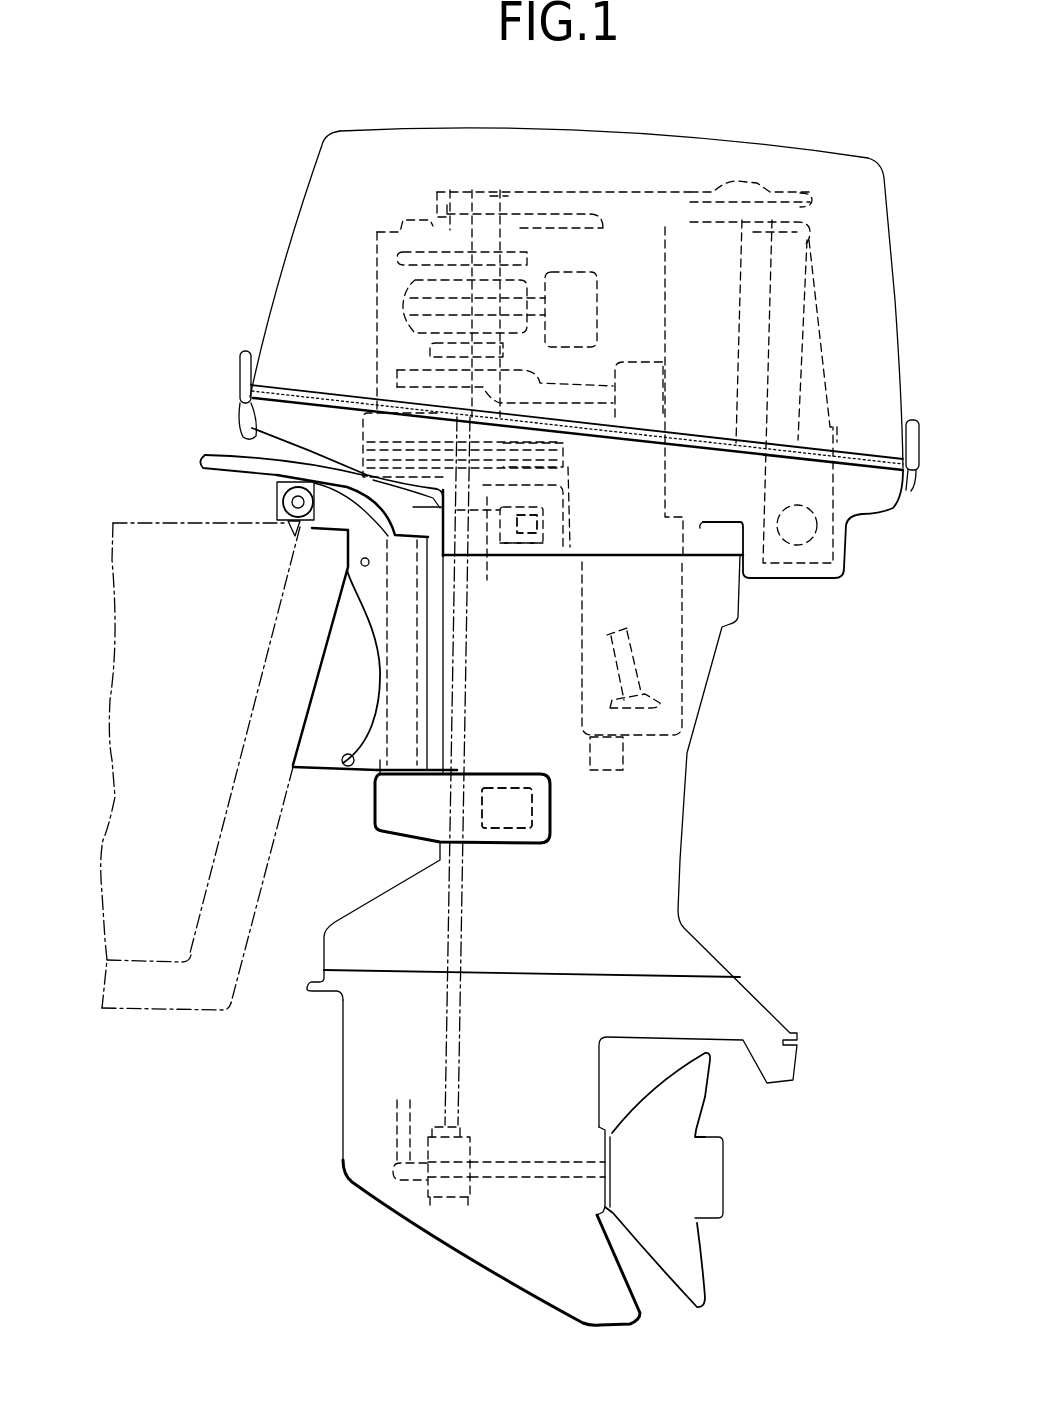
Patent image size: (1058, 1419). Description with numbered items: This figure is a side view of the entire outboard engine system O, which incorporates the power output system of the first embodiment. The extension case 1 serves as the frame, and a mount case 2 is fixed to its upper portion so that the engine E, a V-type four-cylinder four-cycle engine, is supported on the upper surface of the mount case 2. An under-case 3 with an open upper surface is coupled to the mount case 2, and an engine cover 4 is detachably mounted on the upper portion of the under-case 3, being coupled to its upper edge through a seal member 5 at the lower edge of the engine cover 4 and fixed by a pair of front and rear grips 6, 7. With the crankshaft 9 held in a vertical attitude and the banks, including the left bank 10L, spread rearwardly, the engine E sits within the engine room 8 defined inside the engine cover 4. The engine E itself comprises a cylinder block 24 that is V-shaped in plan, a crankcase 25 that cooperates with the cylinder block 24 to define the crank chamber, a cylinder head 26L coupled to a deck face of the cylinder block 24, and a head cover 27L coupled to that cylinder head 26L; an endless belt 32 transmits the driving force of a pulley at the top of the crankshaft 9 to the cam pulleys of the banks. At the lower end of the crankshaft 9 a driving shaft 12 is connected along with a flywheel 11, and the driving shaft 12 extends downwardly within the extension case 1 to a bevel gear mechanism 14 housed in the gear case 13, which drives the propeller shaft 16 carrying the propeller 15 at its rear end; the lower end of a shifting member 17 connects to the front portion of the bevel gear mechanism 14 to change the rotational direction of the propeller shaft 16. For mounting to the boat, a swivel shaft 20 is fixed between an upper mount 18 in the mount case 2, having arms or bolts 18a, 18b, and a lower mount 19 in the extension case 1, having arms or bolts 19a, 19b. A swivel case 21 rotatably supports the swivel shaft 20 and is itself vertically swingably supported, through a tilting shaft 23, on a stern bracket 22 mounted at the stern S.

The outboard engine system O is at (244, 263).
The engine E is at (697, 173).
The stern S is at (157, 520).
The extension case 1 is at (670, 827).
The mount case 2 is at (308, 145).
The under-case 3 is at (862, 507).
The engine cover 4 is at (890, 298).
The seal member 5 is at (860, 452).
The front grip 6 is at (240, 362).
The rear grip 7 is at (913, 420).
The engine room 8 is at (619, 140).
The crankshaft 9 is at (385, 318).
The left bank 10L is at (813, 242).
The flywheel 11 is at (572, 458).
The driving shaft 12 is at (458, 900).
The gear case 13 is at (355, 1062).
The bevel gear mechanism 14 is at (481, 1132).
The propeller 15 is at (688, 1250).
The propeller shaft 16 is at (533, 1173).
The shifting member 17 is at (397, 1128).
The upper mount 18 is at (540, 505).
The arm or bolt 18a is at (486, 580).
The arm or bolt 18b is at (527, 524).
The lower mount 19 is at (537, 812).
The arm or bolt 19a is at (493, 843).
The arm or bolt 19b is at (507, 808).
The swivel shaft 20 is at (400, 693).
The swivel case 21 is at (380, 615).
The stern bracket 22 is at (372, 771).
The tilting shaft 23 is at (278, 500).
The cylinder block 24 is at (601, 237).
The crankcase 25 is at (401, 226).
The left cylinder head 26L is at (749, 391).
The left head cover 27L is at (797, 255).
The endless belt 32 is at (644, 190).